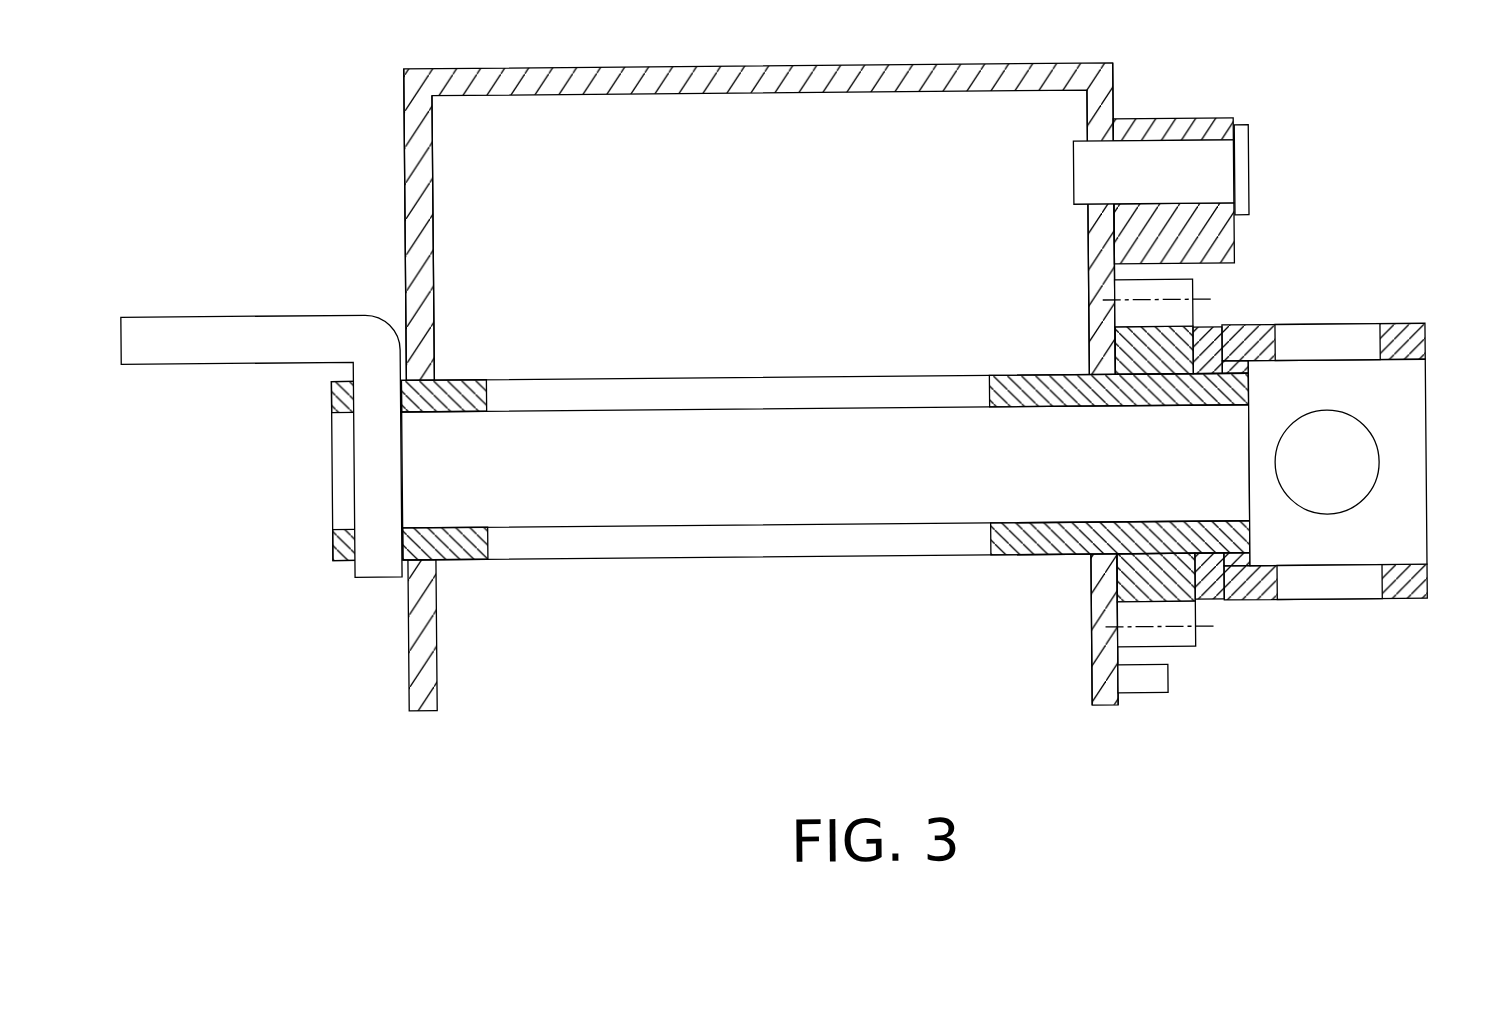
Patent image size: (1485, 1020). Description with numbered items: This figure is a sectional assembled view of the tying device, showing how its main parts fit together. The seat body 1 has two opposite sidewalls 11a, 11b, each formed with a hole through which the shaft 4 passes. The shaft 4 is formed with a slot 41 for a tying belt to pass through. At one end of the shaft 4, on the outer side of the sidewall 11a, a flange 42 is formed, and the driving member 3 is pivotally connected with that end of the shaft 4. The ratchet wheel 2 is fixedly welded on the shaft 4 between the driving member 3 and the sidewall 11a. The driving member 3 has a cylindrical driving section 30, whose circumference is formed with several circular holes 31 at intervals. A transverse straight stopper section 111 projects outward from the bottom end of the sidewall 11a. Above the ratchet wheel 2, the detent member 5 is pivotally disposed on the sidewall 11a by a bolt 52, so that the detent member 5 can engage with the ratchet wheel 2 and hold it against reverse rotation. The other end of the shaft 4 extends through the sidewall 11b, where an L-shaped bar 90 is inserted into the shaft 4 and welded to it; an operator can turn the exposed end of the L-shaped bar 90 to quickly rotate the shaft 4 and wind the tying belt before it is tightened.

The seat body 1 is at (760, 355).
The sidewall 11a is at (1090, 248).
The sidewall 11b is at (435, 229).
The ratchet wheel 2 is at (1170, 535).
The transverse straight stopper section 111 is at (1142, 685).
The driving member 3 is at (1344, 379).
The cylindrical driving section 30 is at (1343, 421).
The circular holes 31 is at (1317, 352).
The shaft 4 is at (1020, 545).
The slot 41 is at (765, 543).
The flange 42 is at (1226, 564).
The detent member 5 is at (1179, 145).
The bolt 52 is at (1171, 161).
The L-shaped bar 90 is at (201, 318).